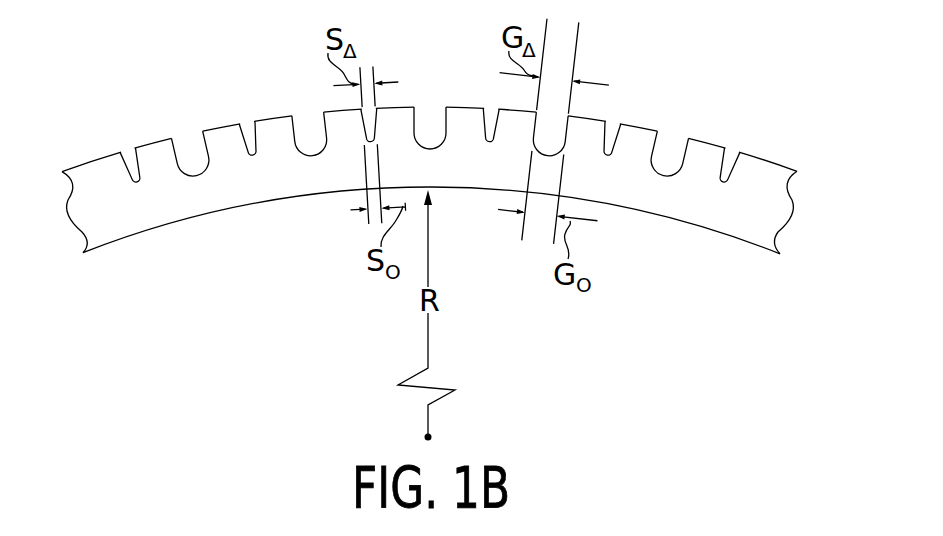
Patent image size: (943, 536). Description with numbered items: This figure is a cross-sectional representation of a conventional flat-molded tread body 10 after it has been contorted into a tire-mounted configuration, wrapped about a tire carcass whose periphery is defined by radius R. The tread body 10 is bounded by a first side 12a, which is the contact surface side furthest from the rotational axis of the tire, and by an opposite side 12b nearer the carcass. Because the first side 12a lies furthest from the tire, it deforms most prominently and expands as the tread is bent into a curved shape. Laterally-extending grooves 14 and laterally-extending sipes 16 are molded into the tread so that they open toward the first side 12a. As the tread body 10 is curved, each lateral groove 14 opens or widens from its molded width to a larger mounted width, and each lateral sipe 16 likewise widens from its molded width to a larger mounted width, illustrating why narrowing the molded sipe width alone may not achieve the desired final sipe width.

The tread body 10 is at (440, 148).
The first side 12a is at (94, 161).
The inner surface 12b is at (193, 218).
The laterally-extending groove 14 is at (178, 146).
The laterally-extending sipe 16 is at (250, 124).